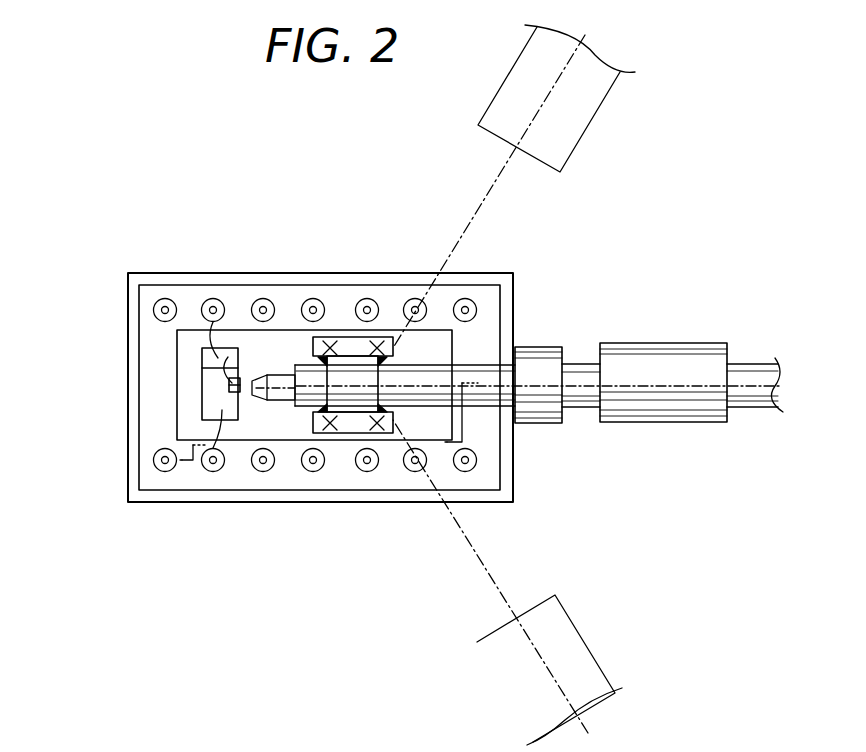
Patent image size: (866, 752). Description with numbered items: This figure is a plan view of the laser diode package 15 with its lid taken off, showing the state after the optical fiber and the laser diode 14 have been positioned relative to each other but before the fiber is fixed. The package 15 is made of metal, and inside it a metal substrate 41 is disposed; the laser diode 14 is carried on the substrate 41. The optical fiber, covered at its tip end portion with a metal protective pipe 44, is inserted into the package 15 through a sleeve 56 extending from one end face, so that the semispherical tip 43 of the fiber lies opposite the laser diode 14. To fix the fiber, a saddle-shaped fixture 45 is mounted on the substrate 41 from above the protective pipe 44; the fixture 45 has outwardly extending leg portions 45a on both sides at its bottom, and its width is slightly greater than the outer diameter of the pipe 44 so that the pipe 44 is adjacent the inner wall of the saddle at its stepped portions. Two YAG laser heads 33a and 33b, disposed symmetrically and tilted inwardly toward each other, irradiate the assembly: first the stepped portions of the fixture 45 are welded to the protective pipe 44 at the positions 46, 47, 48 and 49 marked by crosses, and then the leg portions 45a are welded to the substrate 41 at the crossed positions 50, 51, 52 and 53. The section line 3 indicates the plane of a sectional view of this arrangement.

The section line 3- 3 is at (84, 460).
The laser diode 14 is at (241, 385).
The package 15 is at (495, 502).
The YAG laser head 33a is at (593, 655).
The YAG laser head 33b is at (600, 105).
The metal substrate 41 is at (185, 383).
The semispherical tip 43 is at (253, 383).
The protective pipe 44 is at (585, 408).
The fixture 45 is at (348, 368).
The leg portions 45a is at (348, 428).
The welding position 46 is at (318, 412).
The welding position 47 is at (318, 358).
The welding position 48 is at (393, 412).
The welding position 49 is at (395, 358).
The ball bearing 50 is at (330, 434).
The welding position 51 is at (330, 340).
The welding position 52 is at (378, 434).
The welding position 53 is at (380, 340).
The sleeve 56 is at (539, 348).